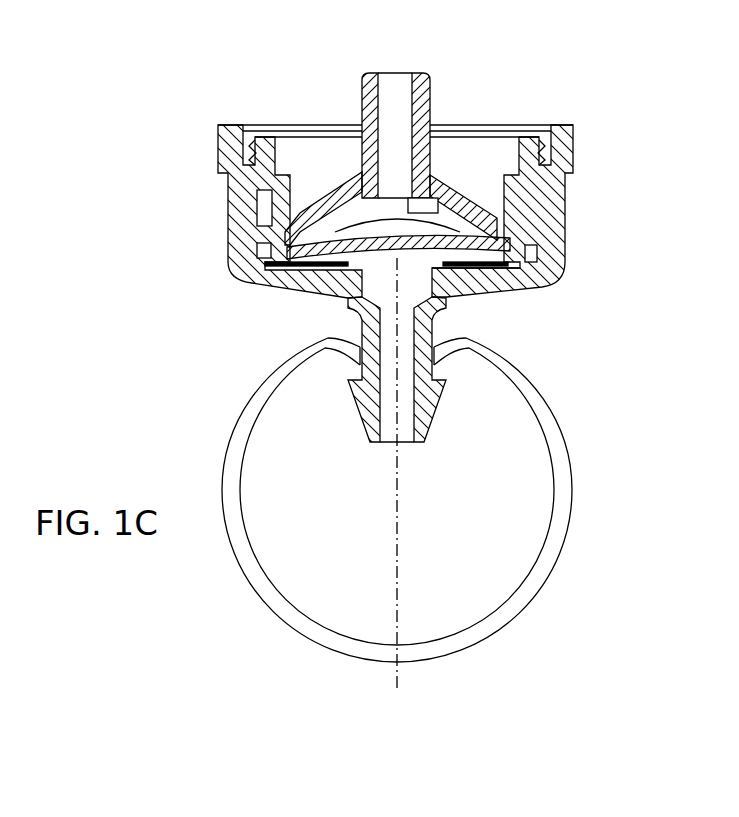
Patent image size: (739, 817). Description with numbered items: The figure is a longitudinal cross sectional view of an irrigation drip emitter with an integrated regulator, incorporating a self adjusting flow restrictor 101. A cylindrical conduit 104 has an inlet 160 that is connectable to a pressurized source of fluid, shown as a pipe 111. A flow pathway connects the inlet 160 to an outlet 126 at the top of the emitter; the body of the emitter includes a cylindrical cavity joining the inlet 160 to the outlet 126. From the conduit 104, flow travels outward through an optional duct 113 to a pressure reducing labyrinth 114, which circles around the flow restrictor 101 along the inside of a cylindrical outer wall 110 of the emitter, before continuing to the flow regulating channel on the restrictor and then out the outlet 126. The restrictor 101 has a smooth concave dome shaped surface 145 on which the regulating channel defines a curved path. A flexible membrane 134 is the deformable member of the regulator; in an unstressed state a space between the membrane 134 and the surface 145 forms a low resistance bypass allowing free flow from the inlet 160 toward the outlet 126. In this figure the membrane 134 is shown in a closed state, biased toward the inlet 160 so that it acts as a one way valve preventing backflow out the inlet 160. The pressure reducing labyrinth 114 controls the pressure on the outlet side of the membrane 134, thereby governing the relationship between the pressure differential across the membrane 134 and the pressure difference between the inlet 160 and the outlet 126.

The cylindrical outer wall 110 is at (573, 173).
The cylindrical conduit 104 is at (449, 305).
The outlet 126 is at (399, 196).
The concave dome shaped surface 145 is at (362, 200).
The self adjusting flow restrictor 101 is at (537, 208).
The duct 113 is at (263, 255).
The pressure reducing labyrinth 114 is at (263, 199).
The flexible membrane 134 is at (485, 252).
The pipe 111 is at (553, 440).
The inlet 160 is at (396, 438).